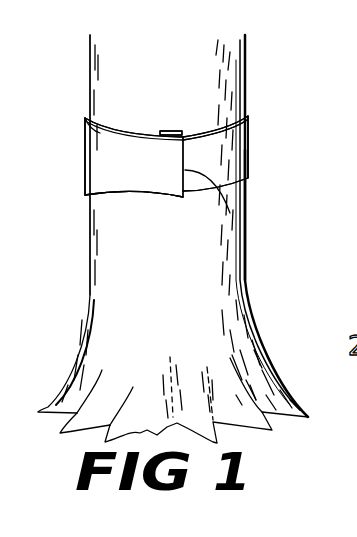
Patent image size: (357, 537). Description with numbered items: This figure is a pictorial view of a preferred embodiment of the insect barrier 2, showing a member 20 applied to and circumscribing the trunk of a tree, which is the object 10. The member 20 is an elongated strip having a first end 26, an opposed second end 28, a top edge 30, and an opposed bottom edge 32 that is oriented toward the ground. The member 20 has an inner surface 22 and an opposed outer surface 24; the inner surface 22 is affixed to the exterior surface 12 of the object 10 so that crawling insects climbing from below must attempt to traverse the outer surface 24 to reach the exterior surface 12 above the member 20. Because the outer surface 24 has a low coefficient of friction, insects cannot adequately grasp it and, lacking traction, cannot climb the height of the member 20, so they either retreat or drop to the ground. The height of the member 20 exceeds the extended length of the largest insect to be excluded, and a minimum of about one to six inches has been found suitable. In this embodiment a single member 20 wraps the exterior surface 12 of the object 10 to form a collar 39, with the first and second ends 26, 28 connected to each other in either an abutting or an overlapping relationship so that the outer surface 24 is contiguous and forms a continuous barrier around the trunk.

The insect barrier 2 is at (123, 177).
The object 10 is at (247, 75).
The exterior surface 12 is at (110, 75).
The member 20 is at (237, 146).
The inner surface 22 is at (115, 128).
The outer surface 24 is at (105, 162).
The first end 26 is at (182, 133).
The second end 28 is at (245, 228).
The top edge 30 is at (249, 112).
The bottom edge 32 is at (163, 198).
The collar 39 is at (248, 178).